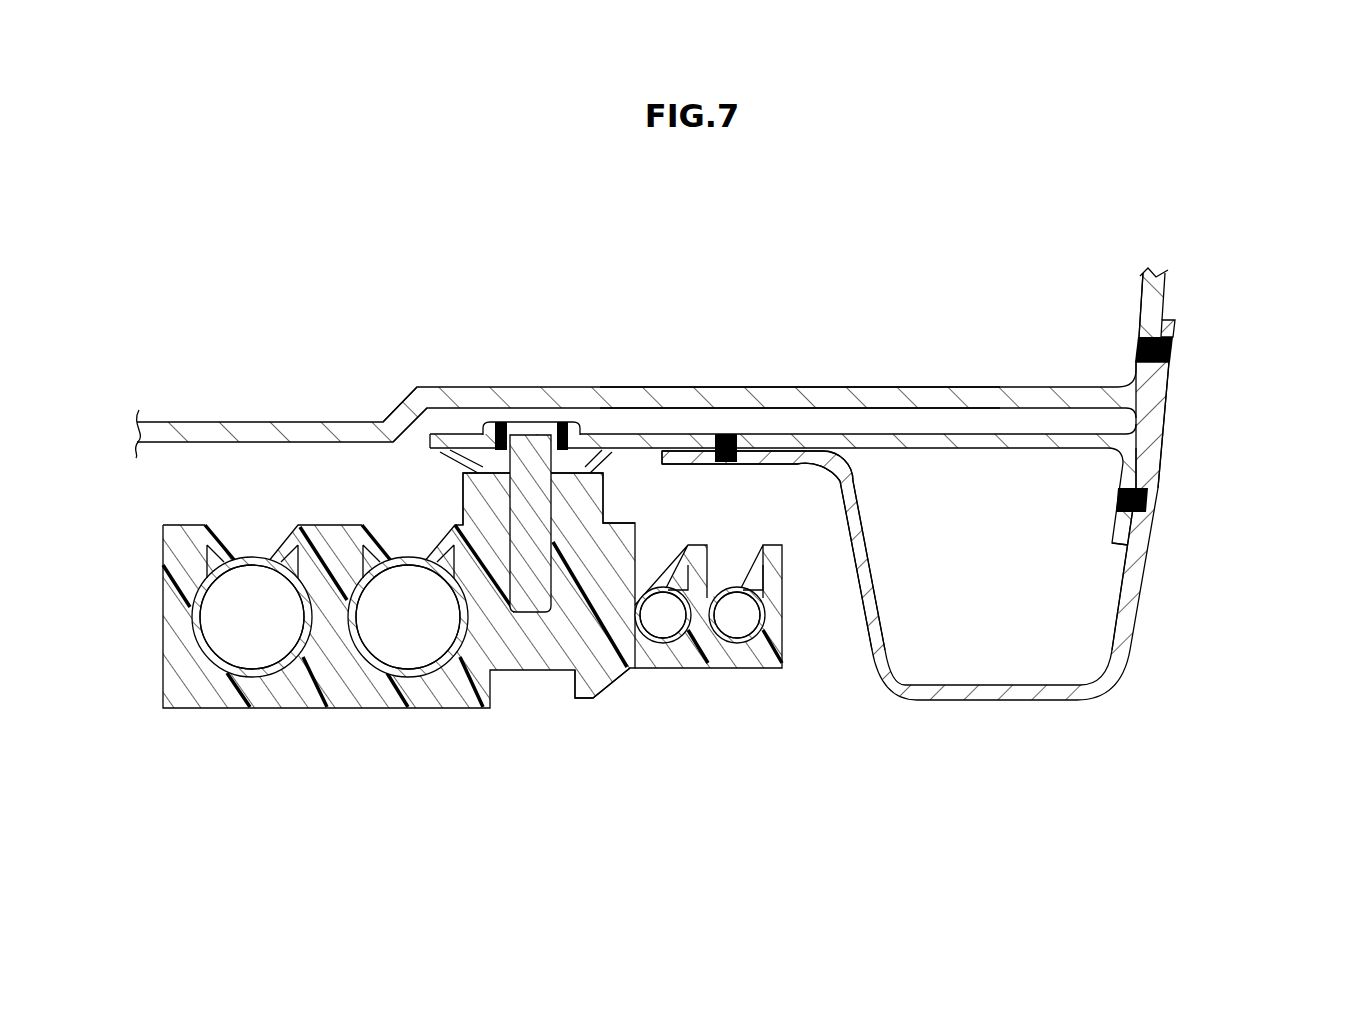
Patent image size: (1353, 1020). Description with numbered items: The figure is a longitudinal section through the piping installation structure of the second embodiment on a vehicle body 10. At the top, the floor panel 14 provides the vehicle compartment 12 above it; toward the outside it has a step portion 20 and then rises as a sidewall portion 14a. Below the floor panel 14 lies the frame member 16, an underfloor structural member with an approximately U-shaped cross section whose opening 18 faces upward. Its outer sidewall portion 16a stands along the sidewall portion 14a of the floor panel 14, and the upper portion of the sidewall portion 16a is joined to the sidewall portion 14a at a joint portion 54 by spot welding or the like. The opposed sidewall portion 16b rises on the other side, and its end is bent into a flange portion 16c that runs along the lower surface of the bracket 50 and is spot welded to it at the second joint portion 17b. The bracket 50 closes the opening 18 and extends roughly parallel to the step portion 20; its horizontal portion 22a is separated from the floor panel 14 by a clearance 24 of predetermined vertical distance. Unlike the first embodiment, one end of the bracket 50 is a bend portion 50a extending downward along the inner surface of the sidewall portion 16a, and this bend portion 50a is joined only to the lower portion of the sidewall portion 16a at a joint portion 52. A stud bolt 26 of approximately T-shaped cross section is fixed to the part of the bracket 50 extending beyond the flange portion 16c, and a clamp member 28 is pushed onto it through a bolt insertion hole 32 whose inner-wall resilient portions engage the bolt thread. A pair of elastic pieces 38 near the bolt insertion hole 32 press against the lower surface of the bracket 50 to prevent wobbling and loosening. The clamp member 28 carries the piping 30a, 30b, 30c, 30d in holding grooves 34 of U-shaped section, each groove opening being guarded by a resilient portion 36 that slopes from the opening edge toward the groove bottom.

The vehicle body 10 is at (1217, 190).
The vehicle compartment 12 is at (191, 398).
The floor panel 14 is at (1180, 299).
The sidewall portion of the floor panel 14a is at (1142, 298).
The frame member 16 is at (1153, 596).
The sidewall portion of the frame member 16a is at (1160, 396).
The sidewall portion of the frame member 16b is at (864, 603).
The flange portion 16c is at (762, 465).
The second joint portion 17b is at (732, 434).
The opening 18 is at (849, 466).
The step portion 20 is at (414, 406).
The horizontal portion 22a is at (678, 434).
The clearance 24 is at (828, 422).
The stud bolt 26 is at (540, 422).
The clamp member 28 is at (149, 657).
The piping 30a is at (234, 672).
The piping 30b is at (390, 672).
The piping 30c is at (672, 633).
The piping 30d is at (747, 633).
The bolt insertion hole 32 is at (534, 603).
The holding groove 34 is at (298, 634).
The resilient portion 36 is at (297, 525).
The elastic piece 38 is at (588, 438).
The bracket 50 is at (1009, 462).
The bend portion 50a is at (1118, 541).
The joint portion 52 is at (1150, 503).
The joint portion 54 is at (1136, 350).